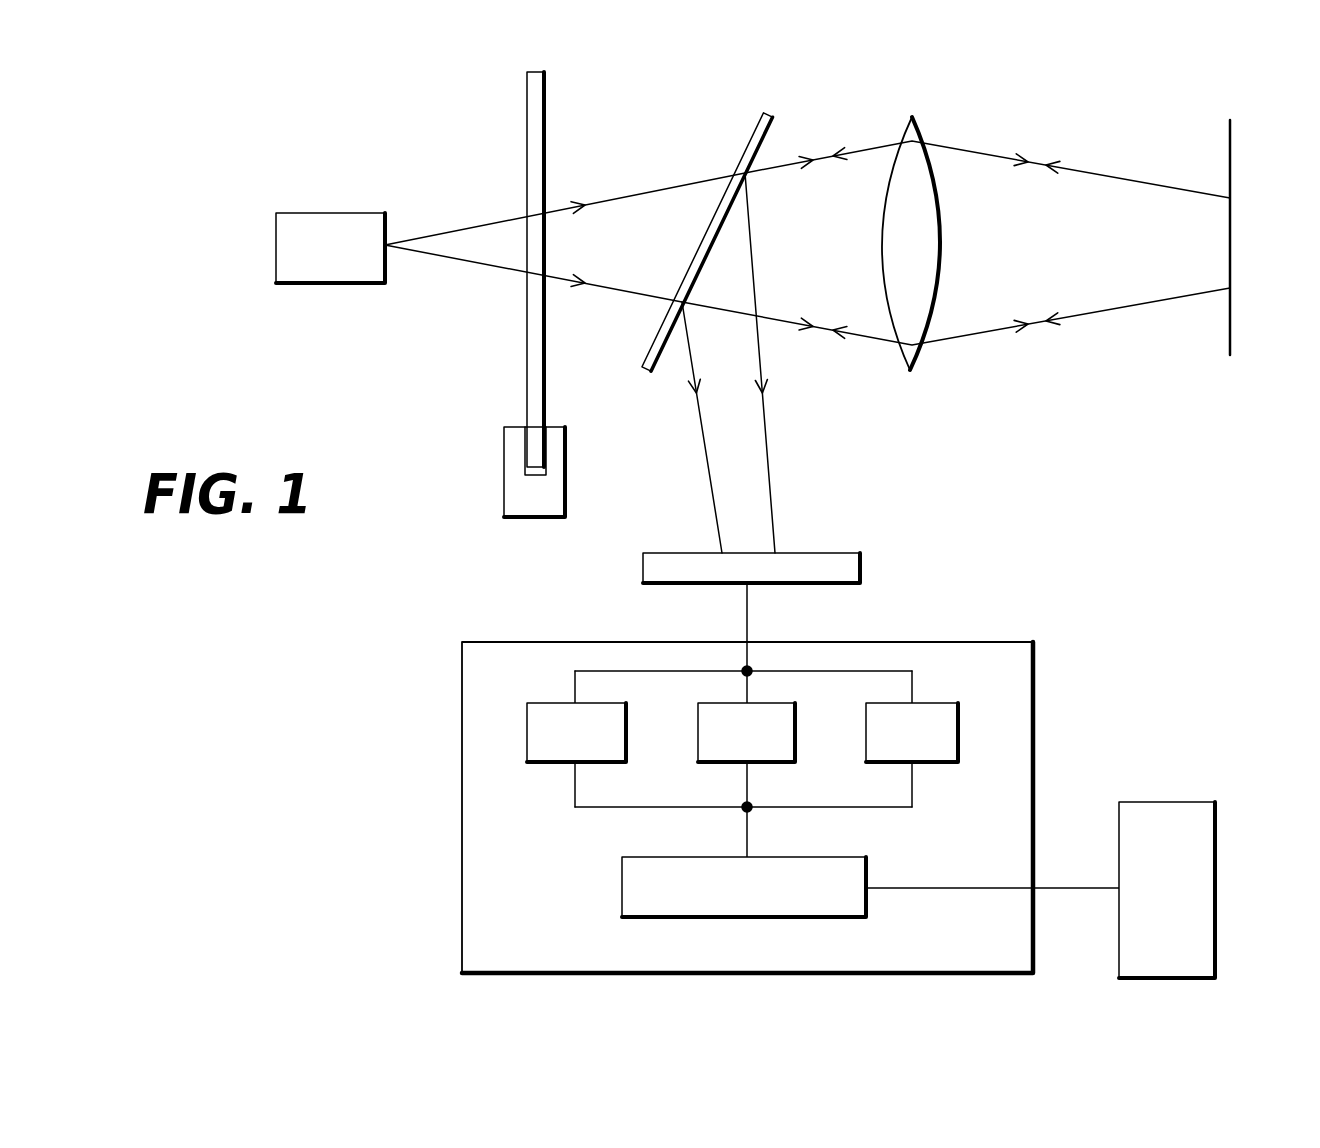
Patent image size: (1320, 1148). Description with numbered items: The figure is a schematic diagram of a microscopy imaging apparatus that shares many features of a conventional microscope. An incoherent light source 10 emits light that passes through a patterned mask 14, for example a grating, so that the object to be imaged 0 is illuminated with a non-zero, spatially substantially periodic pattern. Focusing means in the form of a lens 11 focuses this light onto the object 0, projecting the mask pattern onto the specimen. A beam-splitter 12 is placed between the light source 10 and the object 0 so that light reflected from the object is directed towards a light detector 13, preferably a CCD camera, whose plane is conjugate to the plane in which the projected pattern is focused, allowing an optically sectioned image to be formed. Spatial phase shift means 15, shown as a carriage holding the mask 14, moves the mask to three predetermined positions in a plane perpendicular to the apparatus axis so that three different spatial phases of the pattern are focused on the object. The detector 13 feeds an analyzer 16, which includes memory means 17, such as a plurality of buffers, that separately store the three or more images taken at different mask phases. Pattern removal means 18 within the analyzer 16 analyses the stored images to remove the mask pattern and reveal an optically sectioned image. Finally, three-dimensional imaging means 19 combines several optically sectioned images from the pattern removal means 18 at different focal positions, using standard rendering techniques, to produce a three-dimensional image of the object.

The incoherent light source 10 is at (318, 283).
The lens 11 is at (910, 370).
The beam-splitter 12 is at (644, 371).
The light detector 13 is at (643, 563).
The mask 14 is at (527, 130).
The spatial phase shift means 15 is at (504, 483).
The analyzer 16 is at (462, 713).
The memory means 17 is at (627, 740).
The pattern removal means 18 is at (622, 882).
The 3-D imaging means 19 is at (1216, 888).
The object to be imaged 0 is at (1231, 264).